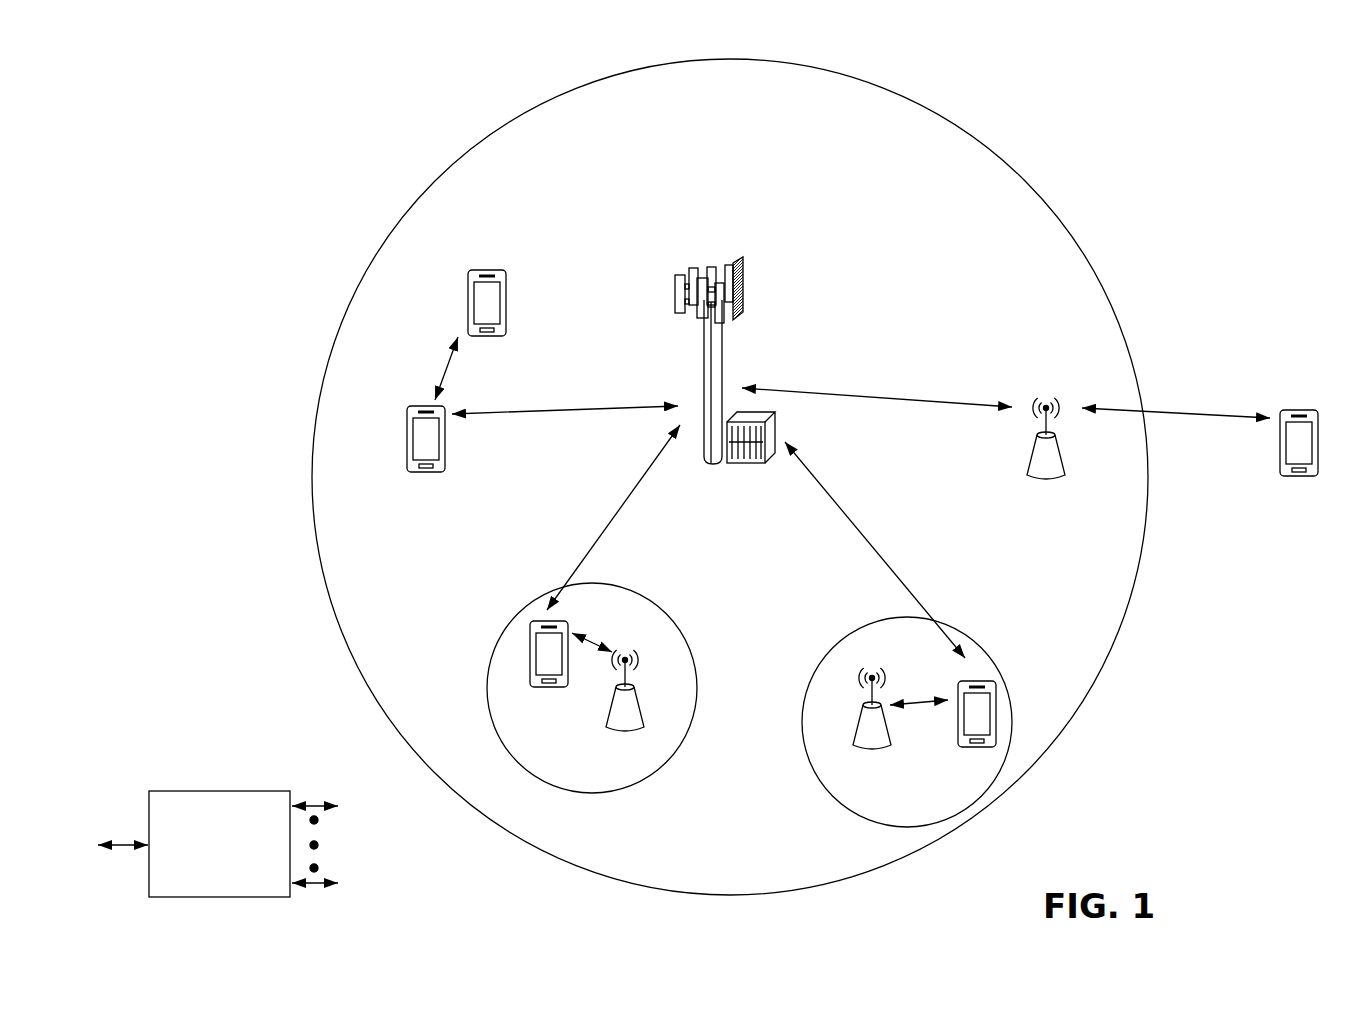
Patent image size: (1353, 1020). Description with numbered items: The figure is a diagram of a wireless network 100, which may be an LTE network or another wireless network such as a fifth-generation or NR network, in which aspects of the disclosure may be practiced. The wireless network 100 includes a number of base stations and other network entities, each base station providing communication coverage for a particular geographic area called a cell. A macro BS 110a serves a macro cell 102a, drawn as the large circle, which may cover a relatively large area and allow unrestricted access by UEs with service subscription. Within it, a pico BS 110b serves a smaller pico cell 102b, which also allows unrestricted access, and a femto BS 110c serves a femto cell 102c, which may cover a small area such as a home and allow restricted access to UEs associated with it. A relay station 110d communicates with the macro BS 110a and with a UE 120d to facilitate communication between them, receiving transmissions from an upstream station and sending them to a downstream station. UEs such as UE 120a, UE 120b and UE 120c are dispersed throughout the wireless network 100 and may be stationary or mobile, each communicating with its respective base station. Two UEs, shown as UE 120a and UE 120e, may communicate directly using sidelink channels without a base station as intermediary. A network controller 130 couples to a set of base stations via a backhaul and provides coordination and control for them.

The wireless network 100 is at (205, 54).
The macro cell 102a is at (1010, 163).
The pico cell 102b is at (682, 627).
The femto cell 102c is at (843, 637).
The macro BS 110a is at (720, 258).
The pico BS 110b is at (645, 718).
The femto BS 110c is at (857, 738).
The relay station 110d is at (1047, 395).
The UE 120a is at (407, 437).
The UE 120b is at (540, 688).
The UE 120c is at (958, 748).
The UE 120d is at (1314, 408).
The UE 120e is at (468, 288).
The network controller 130 is at (217, 790).